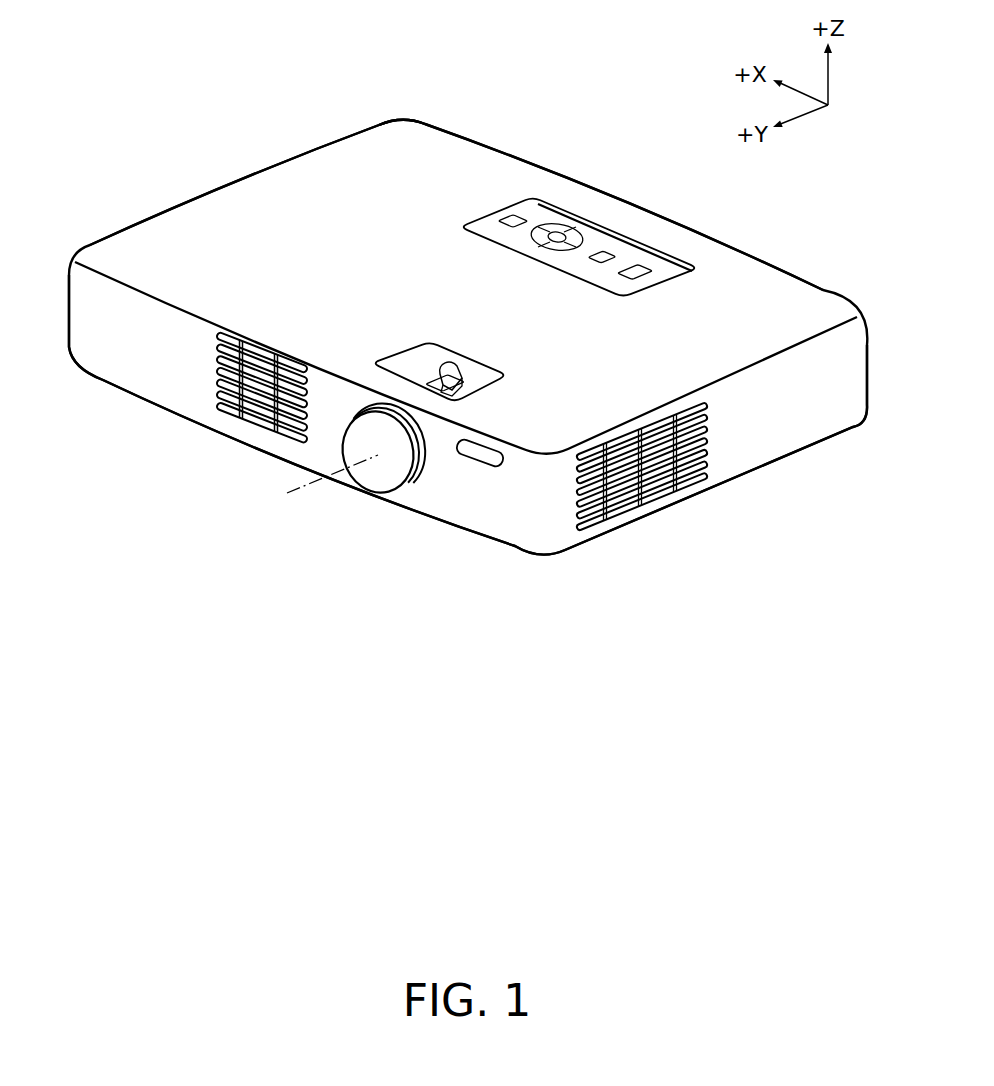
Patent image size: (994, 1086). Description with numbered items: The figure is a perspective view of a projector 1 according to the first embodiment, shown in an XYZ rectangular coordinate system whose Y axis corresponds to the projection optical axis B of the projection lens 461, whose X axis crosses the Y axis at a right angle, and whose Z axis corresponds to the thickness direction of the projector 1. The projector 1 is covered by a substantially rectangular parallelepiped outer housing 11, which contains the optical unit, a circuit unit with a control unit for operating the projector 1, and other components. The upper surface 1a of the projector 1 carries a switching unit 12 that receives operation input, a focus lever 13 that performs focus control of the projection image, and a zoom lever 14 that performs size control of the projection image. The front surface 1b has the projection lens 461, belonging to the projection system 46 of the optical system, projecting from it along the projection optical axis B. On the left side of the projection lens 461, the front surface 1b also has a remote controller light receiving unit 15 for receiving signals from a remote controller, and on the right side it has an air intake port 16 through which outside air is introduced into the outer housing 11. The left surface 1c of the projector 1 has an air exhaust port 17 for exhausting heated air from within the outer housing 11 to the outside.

The projector 1 is at (546, 86).
The upper surface 1a is at (810, 292).
The front surface 1b is at (111, 367).
The left surface 1c is at (823, 424).
The outer housing 11 is at (322, 158).
The switching unit 12 is at (603, 254).
The focus lever 13 is at (426, 378).
The zoom lever 14 is at (450, 371).
The remote controller light receiving unit 15 is at (480, 452).
The air intake port 16 is at (248, 421).
The air exhaust port 17 is at (658, 498).
The projection system 46 is at (380, 499).
The projection lens 461 is at (382, 478).
The projection optical axis B is at (299, 499).